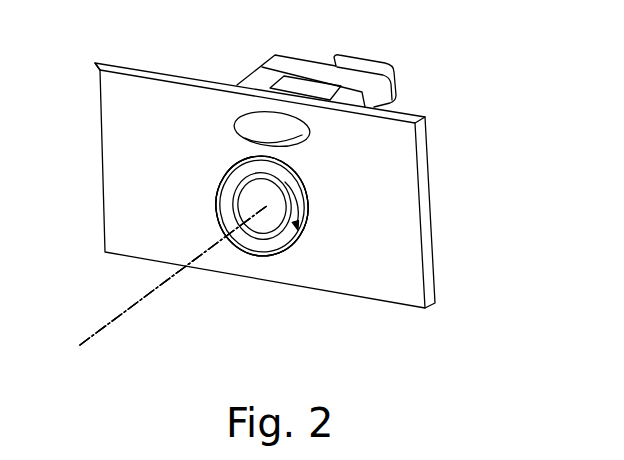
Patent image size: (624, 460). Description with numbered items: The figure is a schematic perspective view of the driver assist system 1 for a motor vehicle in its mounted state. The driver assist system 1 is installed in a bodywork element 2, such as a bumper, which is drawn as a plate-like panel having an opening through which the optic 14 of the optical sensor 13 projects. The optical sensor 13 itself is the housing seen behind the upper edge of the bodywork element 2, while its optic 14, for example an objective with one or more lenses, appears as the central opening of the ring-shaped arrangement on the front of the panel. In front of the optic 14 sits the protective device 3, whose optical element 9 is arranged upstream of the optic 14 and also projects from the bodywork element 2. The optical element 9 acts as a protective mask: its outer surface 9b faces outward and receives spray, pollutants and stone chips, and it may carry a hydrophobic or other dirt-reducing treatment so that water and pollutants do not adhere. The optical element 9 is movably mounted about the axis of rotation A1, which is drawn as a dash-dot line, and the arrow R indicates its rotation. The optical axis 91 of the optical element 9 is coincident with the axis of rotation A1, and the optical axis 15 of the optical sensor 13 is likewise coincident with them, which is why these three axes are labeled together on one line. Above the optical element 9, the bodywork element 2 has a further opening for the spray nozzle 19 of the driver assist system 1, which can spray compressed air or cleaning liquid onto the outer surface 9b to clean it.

The driver assist system 1 is at (483, 79).
The bodywork element 2 is at (117, 185).
The protective device 3 is at (288, 255).
The optical element 9 is at (222, 211).
The outer surface 9b is at (240, 173).
The optical sensor 13 is at (362, 92).
The optic 14 is at (268, 225).
The spray nozzle 19 is at (250, 130).
The rotation direction R is at (307, 217).
The axis of rotation A1 is at (163, 285).
The optical axis 15 is at (174, 275).
The optical axis 91 is at (174, 275).